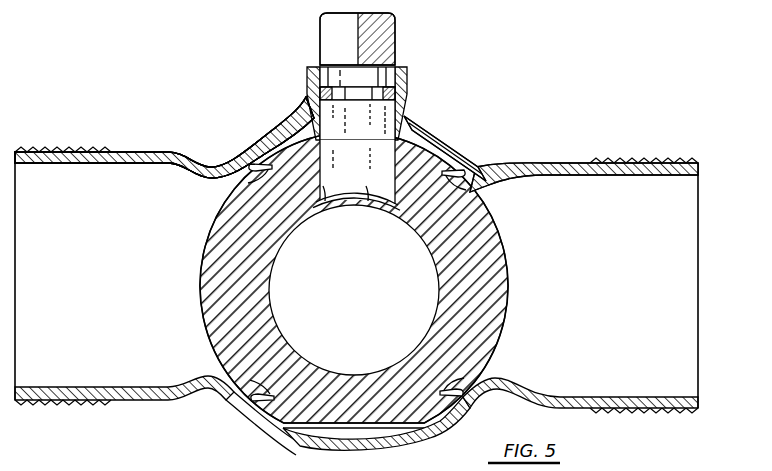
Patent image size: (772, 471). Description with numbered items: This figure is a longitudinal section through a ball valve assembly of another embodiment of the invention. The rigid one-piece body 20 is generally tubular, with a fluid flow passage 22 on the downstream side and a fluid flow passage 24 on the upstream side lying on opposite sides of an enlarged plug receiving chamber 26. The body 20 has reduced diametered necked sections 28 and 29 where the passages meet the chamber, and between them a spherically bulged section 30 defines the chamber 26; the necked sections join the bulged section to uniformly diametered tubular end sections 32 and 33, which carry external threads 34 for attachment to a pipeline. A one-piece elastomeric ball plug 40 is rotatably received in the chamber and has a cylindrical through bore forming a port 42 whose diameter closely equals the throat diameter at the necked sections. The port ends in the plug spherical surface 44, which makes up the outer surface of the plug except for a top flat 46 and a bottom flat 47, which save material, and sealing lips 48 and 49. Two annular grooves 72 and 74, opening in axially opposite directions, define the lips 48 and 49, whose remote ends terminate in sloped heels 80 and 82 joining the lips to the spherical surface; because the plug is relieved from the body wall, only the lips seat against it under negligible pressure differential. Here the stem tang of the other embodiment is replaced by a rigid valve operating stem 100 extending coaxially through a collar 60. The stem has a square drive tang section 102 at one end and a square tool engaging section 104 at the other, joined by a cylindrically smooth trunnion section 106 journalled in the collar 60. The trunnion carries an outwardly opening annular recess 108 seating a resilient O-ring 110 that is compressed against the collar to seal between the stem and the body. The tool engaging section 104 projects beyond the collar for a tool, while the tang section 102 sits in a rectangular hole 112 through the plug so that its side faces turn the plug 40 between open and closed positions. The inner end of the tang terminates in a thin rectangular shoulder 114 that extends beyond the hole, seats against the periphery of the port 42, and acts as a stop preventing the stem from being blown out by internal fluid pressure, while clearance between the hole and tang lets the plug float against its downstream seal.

The body 20 is at (134, 414).
The fluid flow passage 22 is at (636, 396).
The fluid flow passage 24 is at (78, 386).
The plug receiving chamber 26 is at (322, 446).
The necked section 28 is at (498, 168).
The necked section 29 is at (214, 162).
The spherically bulged section 30 is at (263, 139).
The tubular end section 32 is at (572, 162).
The tubular end section 33 is at (152, 151).
The external threads 34 is at (88, 148).
The ball plug 40 is at (508, 326).
The port 42 is at (433, 322).
The spherical surface 44 is at (508, 278).
The top flat 46 is at (414, 130).
The bottom flat 47 is at (388, 450).
The sealing lip 48 is at (456, 155).
The sealing lip 49 is at (262, 151).
The collar 60 is at (307, 75).
The annular groove 72 is at (476, 186).
The annular groove 74 is at (256, 172).
The sloped heel 80 is at (444, 150).
The sloped heel 82 is at (284, 128).
The valve operating stem 100 is at (403, 50).
The drive tang section 102 is at (362, 200).
The tool engaging section 104 is at (396, 30).
The trunnion section 106 is at (398, 75).
The annular recess 108 is at (346, 112).
The O-ring 110 is at (396, 92).
The rectangular hole 112 is at (326, 201).
The shoulder 114 is at (378, 201).